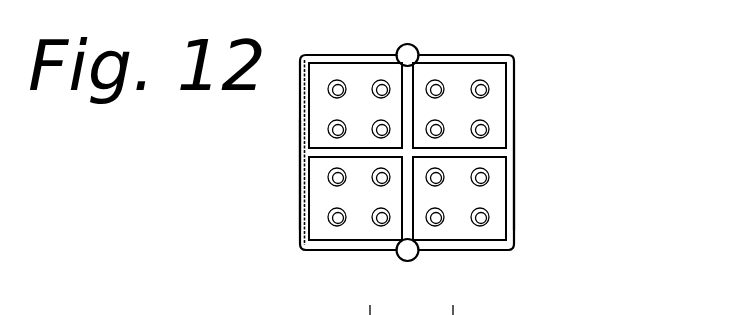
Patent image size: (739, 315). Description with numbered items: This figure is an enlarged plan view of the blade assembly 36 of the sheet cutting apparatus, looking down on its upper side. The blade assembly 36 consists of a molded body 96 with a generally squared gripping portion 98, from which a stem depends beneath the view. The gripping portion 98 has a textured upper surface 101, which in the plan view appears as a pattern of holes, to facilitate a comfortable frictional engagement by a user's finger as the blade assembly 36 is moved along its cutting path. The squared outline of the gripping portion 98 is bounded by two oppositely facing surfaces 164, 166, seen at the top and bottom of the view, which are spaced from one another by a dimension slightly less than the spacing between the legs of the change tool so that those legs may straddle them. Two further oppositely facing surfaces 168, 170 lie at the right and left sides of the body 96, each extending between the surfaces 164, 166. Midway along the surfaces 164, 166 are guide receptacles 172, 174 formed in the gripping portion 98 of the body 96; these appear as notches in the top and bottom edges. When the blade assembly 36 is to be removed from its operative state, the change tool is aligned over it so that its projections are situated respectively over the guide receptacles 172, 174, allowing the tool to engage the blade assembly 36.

The blade assembly 36 is at (498, 143).
The molded body 96 is at (497, 102).
The gripping portion 98 is at (358, 83).
The textured upper surface 101 is at (446, 123).
The surface 164 is at (478, 56).
The surface 166 is at (460, 249).
The surface 168 is at (515, 190).
The surface 170 is at (302, 203).
The guide receptacle 172 is at (407, 251).
The guide receptacle 174 is at (410, 56).